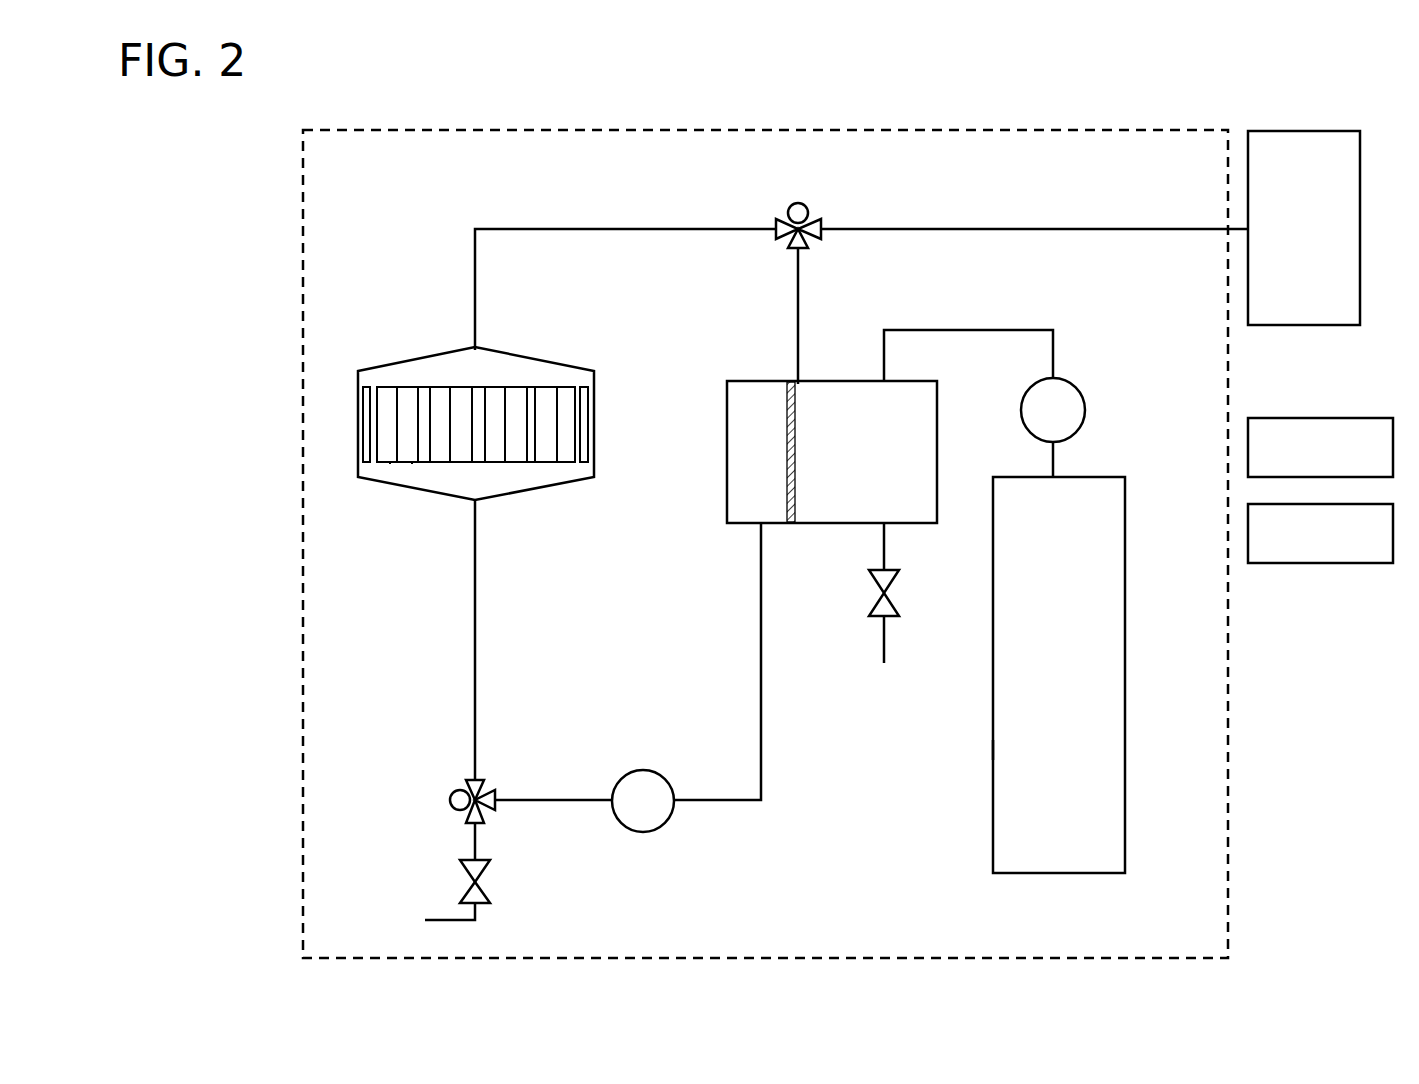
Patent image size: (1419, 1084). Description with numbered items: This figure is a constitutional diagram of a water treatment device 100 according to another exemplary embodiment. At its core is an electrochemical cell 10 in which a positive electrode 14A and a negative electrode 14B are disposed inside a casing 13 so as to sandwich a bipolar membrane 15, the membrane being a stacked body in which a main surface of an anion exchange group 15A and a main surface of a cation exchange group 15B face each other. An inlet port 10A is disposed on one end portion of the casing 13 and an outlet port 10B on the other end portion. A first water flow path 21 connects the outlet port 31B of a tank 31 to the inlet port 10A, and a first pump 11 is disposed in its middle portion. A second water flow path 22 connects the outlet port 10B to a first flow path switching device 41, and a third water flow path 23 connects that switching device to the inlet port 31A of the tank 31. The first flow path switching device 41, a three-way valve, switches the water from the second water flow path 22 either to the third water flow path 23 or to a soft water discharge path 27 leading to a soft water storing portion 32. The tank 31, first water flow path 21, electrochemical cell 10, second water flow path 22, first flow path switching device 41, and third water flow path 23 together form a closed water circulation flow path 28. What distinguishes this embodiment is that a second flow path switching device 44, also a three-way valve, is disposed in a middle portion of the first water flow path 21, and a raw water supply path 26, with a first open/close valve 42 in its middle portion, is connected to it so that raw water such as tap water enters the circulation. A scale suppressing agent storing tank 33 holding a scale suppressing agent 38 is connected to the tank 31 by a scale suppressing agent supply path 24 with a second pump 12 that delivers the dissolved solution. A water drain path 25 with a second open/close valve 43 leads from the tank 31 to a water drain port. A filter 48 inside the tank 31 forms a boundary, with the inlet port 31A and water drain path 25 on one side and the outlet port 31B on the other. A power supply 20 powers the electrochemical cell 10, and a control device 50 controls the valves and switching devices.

The water treatment device 100 is at (584, 130).
The electrochemical cell 10 is at (472, 528).
The inlet port 10A is at (478, 503).
The outlet port 10B is at (478, 345).
The casing 13 is at (553, 365).
The positive electrode 14A is at (581, 464).
The negative electrode 14B is at (364, 464).
The bipolar membrane 15 is at (462, 510).
The anion exchange group 15A is at (390, 464).
The cation exchange group 15B is at (412, 464).
The first pump 11 is at (668, 822).
The second pump 12 is at (1083, 398).
The power supply 20 is at (1325, 565).
The first water flow path 21 is at (716, 798).
The second water flow path 22 is at (602, 229).
The third water flow path 23 is at (794, 268).
The scale suppressing agent supply path 24 is at (992, 332).
The water drain path 25 is at (882, 552).
The raw water supply path 26 is at (478, 845).
The soft water discharge path 27 is at (1026, 229).
The water circulation flow path 28 is at (530, 793).
The tank 31 is at (799, 439).
The inlet port 31A is at (806, 378).
The outlet port 31B is at (759, 531).
The soft water storing portion 32 is at (1347, 200).
The scale suppressing agent storing tank 33 is at (993, 752).
The scale suppressing agent 38 is at (1113, 796).
The first flow path switching device 41 is at (808, 205).
The first open/close valve 42 is at (490, 898).
The second open/close valve 43 is at (872, 608).
The second flow path switching device 44 is at (457, 790).
The filter 48 is at (787, 408).
The control device 50 is at (1305, 418).